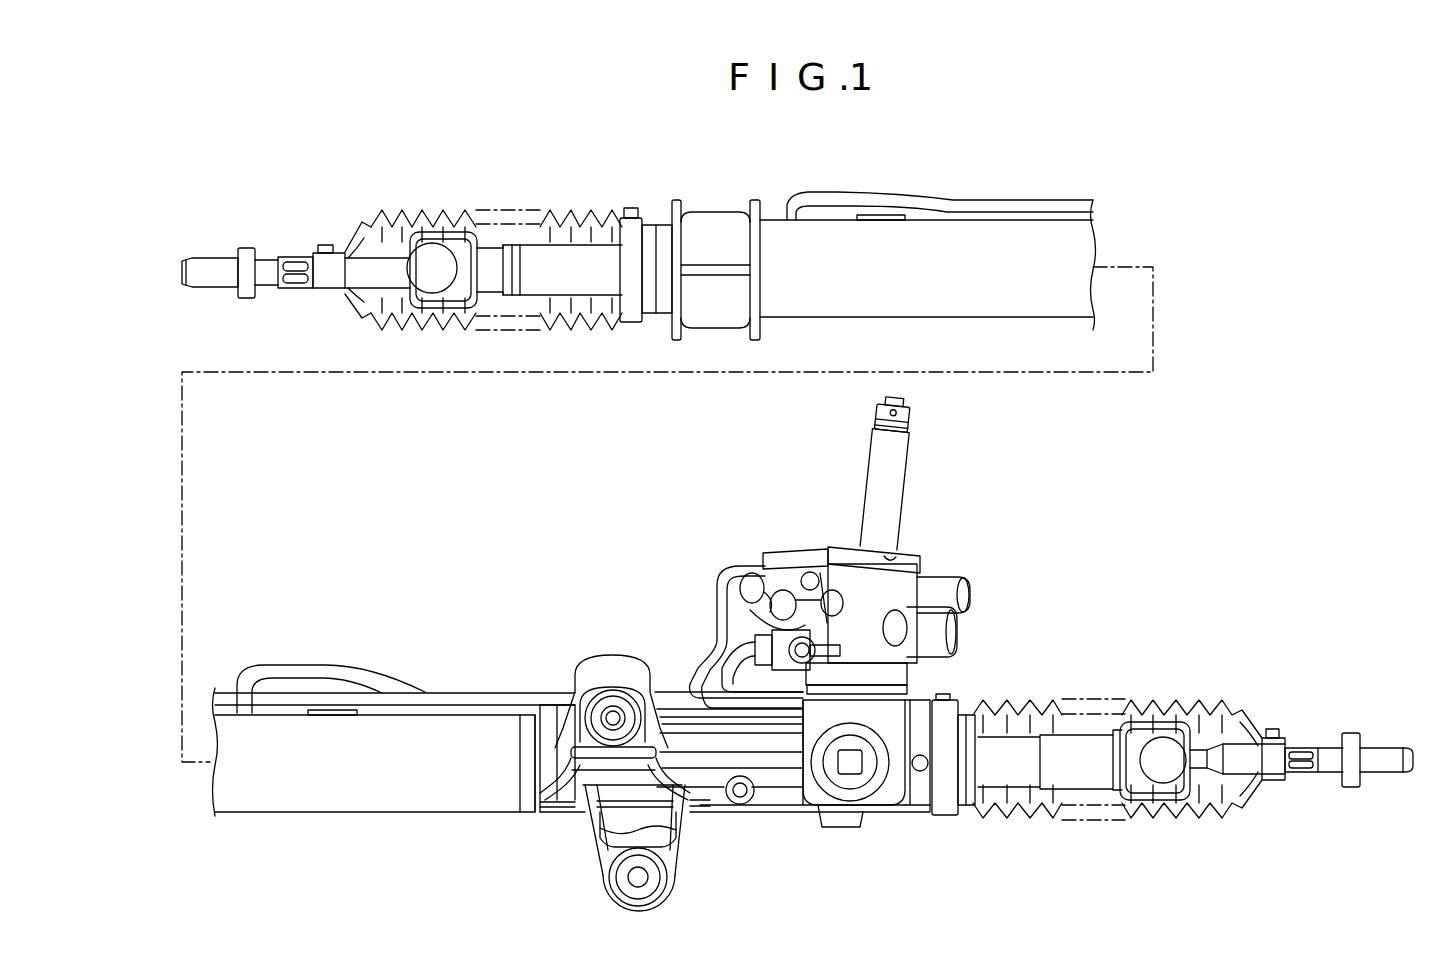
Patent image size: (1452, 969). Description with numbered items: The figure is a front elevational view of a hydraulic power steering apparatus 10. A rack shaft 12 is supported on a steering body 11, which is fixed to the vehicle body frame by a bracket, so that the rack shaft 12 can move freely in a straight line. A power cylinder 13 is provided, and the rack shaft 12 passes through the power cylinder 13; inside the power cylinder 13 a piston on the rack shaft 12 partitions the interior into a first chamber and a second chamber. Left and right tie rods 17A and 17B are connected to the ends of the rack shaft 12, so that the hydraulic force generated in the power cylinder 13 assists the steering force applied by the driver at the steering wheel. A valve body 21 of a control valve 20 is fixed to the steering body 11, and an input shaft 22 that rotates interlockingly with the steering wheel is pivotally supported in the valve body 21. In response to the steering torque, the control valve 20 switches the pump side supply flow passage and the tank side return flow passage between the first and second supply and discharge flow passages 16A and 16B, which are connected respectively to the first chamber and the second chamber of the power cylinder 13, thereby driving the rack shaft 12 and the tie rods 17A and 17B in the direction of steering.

The hydraulic power steering apparatus 10 is at (1205, 228).
The steering body 11 is at (758, 812).
The rack shaft 12 is at (1081, 776).
The power cylinder 13 is at (374, 806).
The first supply and discharge flow passage 16A is at (982, 205).
The second supply and discharge flow passage 16B is at (322, 665).
The left tie rod 17A is at (262, 266).
The right tie rod 17B is at (1372, 772).
The control valve 20 is at (925, 556).
The valve body 21 is at (893, 590).
The input shaft 22 is at (903, 478).